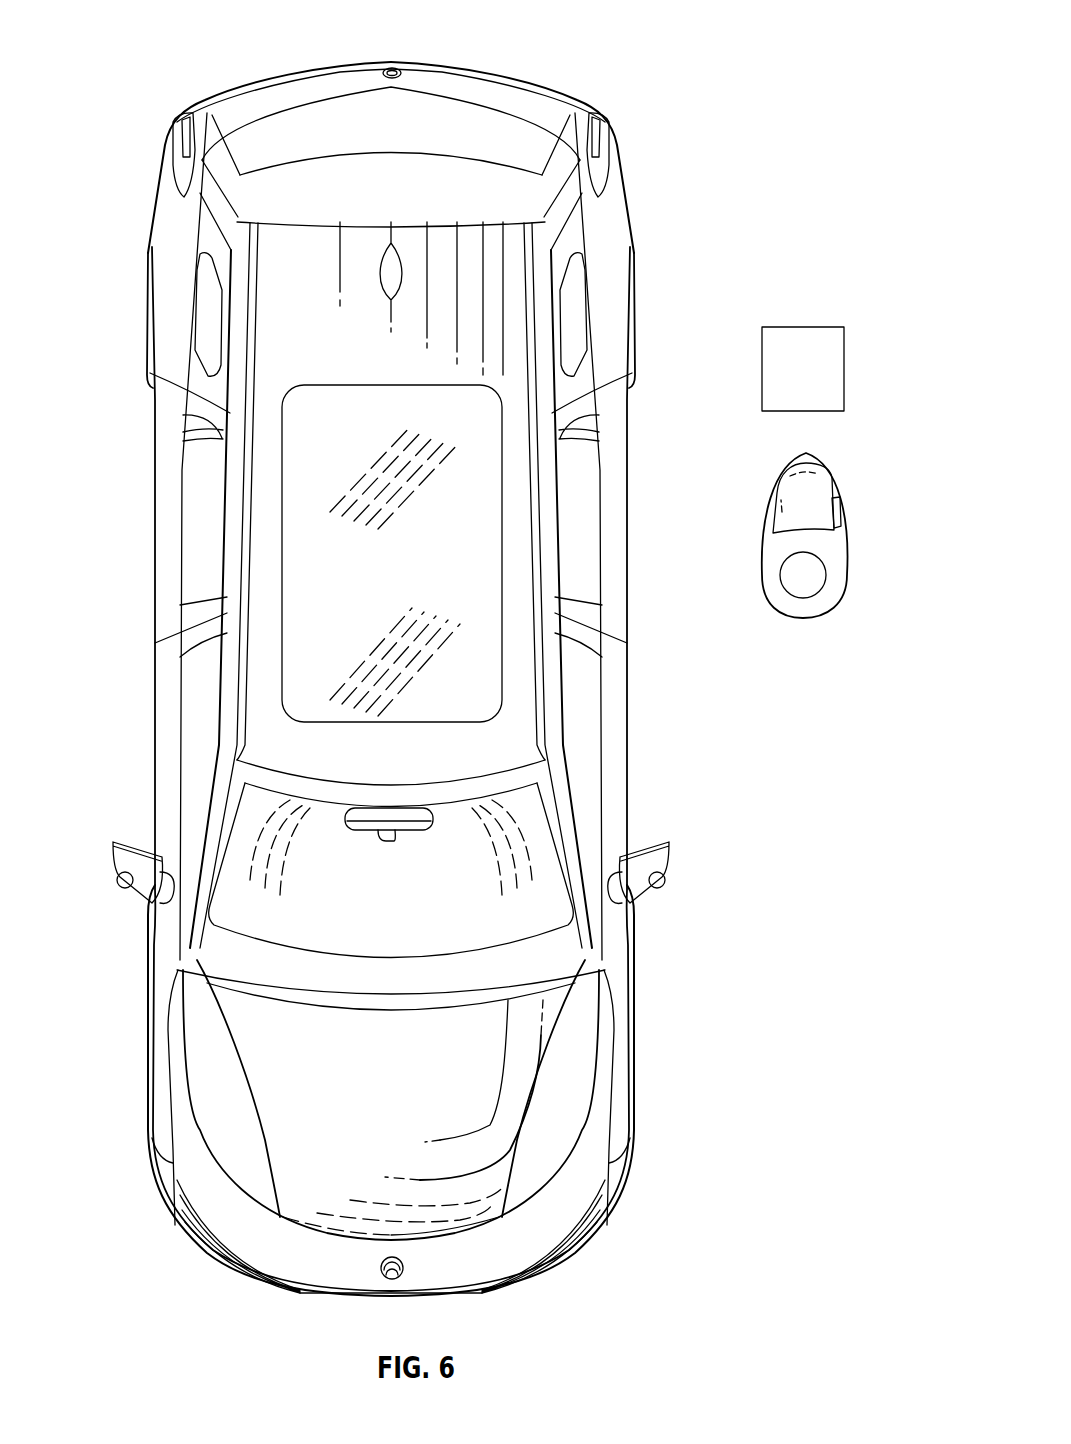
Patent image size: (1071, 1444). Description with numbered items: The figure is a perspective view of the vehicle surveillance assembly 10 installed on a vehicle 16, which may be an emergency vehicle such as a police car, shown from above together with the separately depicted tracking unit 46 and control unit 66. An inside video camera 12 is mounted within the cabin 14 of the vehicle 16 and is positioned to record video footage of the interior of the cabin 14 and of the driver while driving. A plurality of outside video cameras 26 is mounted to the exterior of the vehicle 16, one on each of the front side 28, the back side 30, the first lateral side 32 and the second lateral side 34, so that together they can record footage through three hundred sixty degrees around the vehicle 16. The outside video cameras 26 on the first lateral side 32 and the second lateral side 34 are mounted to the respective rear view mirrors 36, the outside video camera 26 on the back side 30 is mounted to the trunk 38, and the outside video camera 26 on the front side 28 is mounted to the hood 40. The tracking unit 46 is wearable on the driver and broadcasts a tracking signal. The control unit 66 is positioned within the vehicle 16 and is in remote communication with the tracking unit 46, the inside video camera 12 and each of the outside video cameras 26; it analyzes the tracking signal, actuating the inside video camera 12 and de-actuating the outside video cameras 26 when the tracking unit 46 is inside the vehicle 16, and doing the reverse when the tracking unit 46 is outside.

The vehicle surveillance assembly 10 is at (416, 669).
The inside video camera 12 is at (395, 841).
The cabin 14 is at (281, 886).
The vehicle 16 is at (126, 621).
The outside video cameras 26 is at (392, 66).
The front side 28 is at (510, 1289).
The back side 30 is at (399, 129).
The first lateral side 32 is at (137, 722).
The second lateral side 34 is at (641, 633).
The rear view mirrors 36 is at (118, 843).
The trunk 38 is at (318, 105).
The hood 40 is at (457, 1185).
The tracking unit 46 is at (845, 510).
The control unit 66 is at (803, 325).